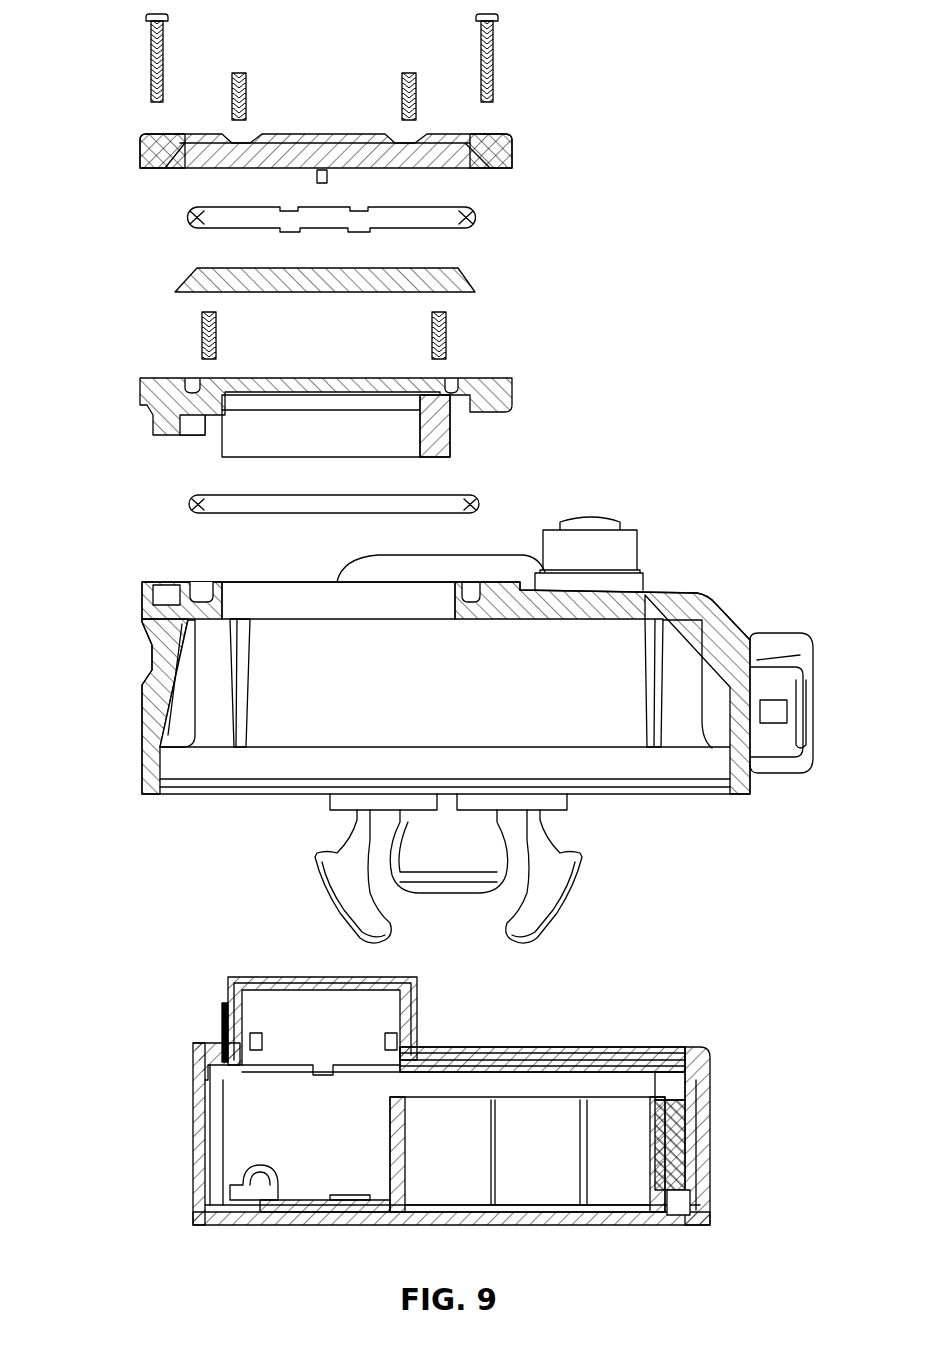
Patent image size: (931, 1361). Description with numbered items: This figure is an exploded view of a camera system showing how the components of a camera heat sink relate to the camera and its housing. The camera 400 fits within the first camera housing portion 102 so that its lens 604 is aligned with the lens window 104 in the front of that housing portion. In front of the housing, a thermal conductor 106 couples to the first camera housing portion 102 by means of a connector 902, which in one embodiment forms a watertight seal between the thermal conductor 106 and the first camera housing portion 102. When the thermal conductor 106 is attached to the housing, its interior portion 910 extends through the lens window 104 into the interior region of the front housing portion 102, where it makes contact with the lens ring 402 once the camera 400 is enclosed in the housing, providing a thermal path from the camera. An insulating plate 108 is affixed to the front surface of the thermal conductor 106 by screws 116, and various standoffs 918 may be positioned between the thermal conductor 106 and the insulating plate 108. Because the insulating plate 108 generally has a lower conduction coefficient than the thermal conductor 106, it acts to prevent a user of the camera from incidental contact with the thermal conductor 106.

The screws 116 is at (151, 58).
The insulating plate 108 is at (508, 151).
The standoffs 918 is at (470, 223).
The thermal conductor 106 is at (495, 387).
The interior portion 910 is at (453, 432).
The connector 902 is at (192, 503).
The first camera housing portion 102 is at (163, 678).
The lens window 104 is at (358, 603).
The camera 400 is at (688, 1205).
The lens 604 is at (258, 985).
The lens ring 402 is at (430, 1052).